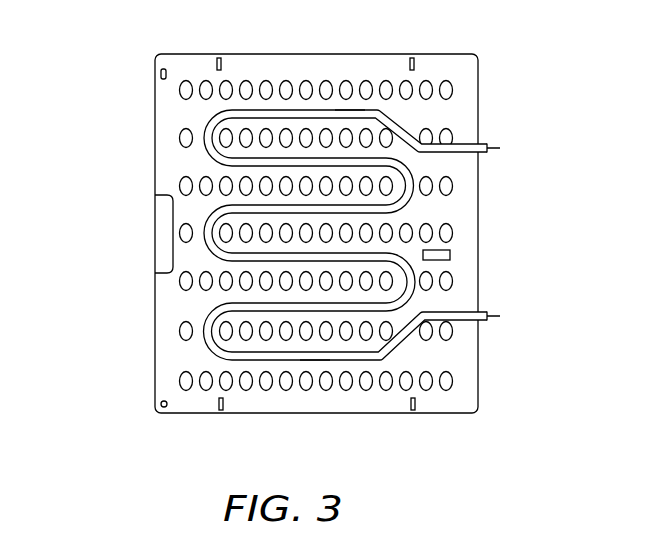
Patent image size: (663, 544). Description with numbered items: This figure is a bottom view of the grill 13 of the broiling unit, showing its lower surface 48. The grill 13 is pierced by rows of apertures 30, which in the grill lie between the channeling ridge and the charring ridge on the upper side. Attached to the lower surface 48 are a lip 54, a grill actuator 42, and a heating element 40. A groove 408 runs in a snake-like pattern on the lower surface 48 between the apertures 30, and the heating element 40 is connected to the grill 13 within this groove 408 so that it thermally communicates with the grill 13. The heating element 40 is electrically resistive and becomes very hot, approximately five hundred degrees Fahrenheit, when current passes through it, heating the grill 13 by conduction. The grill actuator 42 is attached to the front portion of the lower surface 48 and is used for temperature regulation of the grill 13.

The grill 13 is at (281, 229).
The apertures 30 is at (184, 88).
The heating element 40 is at (273, 110).
The lip 54 is at (350, 110).
The grill actuator 42 is at (450, 255).
The lower surface 48 is at (467, 377).
The groove 408 is at (316, 360).